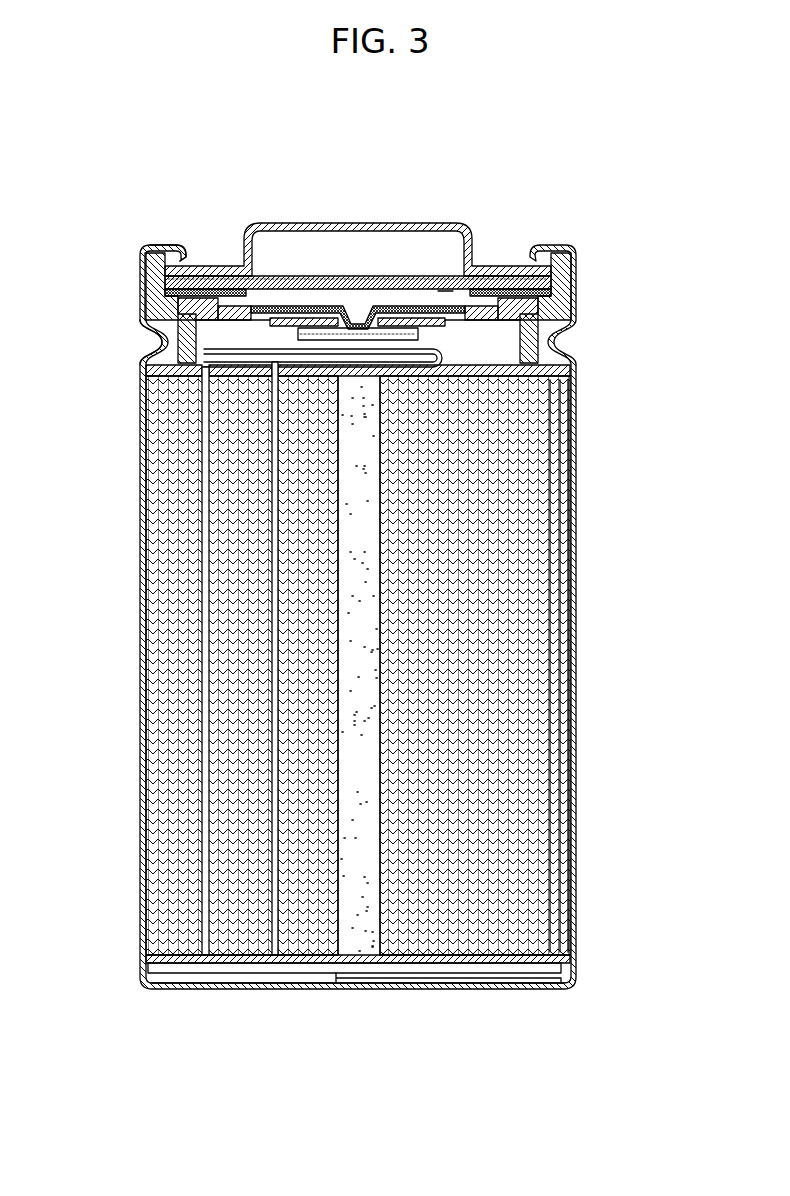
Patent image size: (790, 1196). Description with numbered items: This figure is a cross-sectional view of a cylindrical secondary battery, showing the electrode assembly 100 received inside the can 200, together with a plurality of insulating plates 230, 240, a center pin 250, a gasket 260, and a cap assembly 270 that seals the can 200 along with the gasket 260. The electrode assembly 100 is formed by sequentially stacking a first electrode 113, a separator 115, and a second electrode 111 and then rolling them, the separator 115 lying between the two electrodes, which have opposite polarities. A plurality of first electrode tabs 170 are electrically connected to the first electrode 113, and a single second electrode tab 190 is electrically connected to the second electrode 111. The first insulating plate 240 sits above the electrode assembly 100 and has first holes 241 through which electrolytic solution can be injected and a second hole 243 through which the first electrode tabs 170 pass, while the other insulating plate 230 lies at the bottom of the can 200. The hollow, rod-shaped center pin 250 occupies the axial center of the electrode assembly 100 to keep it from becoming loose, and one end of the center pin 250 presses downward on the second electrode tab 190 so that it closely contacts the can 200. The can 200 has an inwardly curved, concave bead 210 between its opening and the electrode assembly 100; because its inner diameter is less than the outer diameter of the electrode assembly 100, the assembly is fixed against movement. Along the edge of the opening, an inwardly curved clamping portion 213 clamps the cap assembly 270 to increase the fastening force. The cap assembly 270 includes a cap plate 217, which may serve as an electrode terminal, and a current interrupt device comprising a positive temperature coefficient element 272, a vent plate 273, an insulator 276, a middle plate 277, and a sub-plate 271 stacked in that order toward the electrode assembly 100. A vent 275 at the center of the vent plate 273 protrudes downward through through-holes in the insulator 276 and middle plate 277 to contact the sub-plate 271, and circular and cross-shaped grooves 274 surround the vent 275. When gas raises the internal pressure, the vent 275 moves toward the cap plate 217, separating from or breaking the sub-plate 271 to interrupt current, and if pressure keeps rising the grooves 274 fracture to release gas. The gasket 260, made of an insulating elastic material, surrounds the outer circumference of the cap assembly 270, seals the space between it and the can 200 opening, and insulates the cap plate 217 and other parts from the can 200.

The electrode assembly 100 is at (379, 589).
The second electrode 111 is at (528, 512).
The first electrode 113 is at (553, 455).
The separator 115 is at (550, 428).
The first electrode tab 170 is at (440, 349).
The second electrode tab 190 is at (405, 999).
The can 200 is at (140, 432).
The bead 210 is at (150, 338).
The clamping portion 213 is at (174, 244).
The cap plate 217 is at (360, 216).
The insulating plate 230 is at (246, 962).
The first insulating plate 240 is at (165, 360).
The first hole 241 is at (505, 365).
The second hole 243 is at (150, 386).
The center pin 250 is at (335, 505).
The gasket 260 is at (556, 256).
The cap assembly 270 is at (358, 235).
The sub-plate 271 is at (368, 261).
The positive temperature coefficient element 272 is at (492, 256).
The vent plate 273 is at (191, 272).
The grooves 274 is at (433, 293).
The vent 275 is at (349, 303).
The insulator 276 is at (226, 274).
The middle plate 277 is at (312, 300).